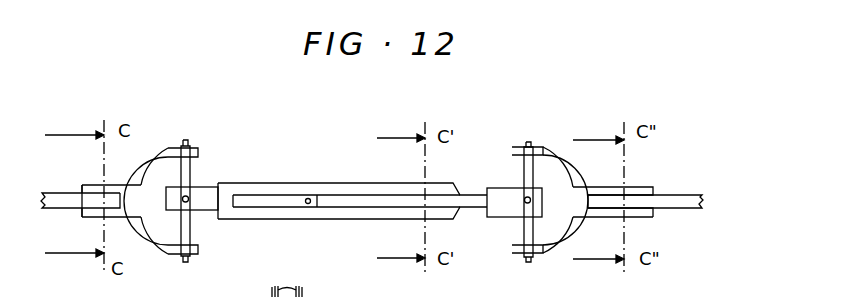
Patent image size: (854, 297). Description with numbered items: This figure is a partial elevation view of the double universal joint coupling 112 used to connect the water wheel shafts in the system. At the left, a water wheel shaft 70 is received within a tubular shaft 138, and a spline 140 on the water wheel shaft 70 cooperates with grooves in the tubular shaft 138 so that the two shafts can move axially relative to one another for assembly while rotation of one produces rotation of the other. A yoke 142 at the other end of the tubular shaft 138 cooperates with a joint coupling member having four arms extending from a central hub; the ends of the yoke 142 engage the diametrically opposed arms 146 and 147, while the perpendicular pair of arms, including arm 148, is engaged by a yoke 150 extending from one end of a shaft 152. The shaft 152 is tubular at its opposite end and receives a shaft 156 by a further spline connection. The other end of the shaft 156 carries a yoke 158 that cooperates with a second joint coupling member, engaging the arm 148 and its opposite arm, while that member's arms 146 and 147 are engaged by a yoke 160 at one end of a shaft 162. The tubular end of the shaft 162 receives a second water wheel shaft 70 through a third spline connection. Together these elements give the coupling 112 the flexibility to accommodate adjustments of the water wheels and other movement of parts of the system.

The water wheel shaft 70 is at (62, 192).
The double universal joint coupling 112 is at (308, 153).
The tubular shaft 138 is at (90, 218).
The spline 140 is at (113, 218).
The yoke 142 is at (160, 150).
The arm 146 is at (205, 187).
The arm 147 is at (198, 236).
The arm 148 is at (184, 202).
The yoke 150 is at (230, 182).
The shaft 152 is at (333, 220).
The shaft 156 is at (465, 190).
The yoke 158 is at (500, 218).
The yoke 160 is at (540, 150).
The shaft 162 is at (628, 186).